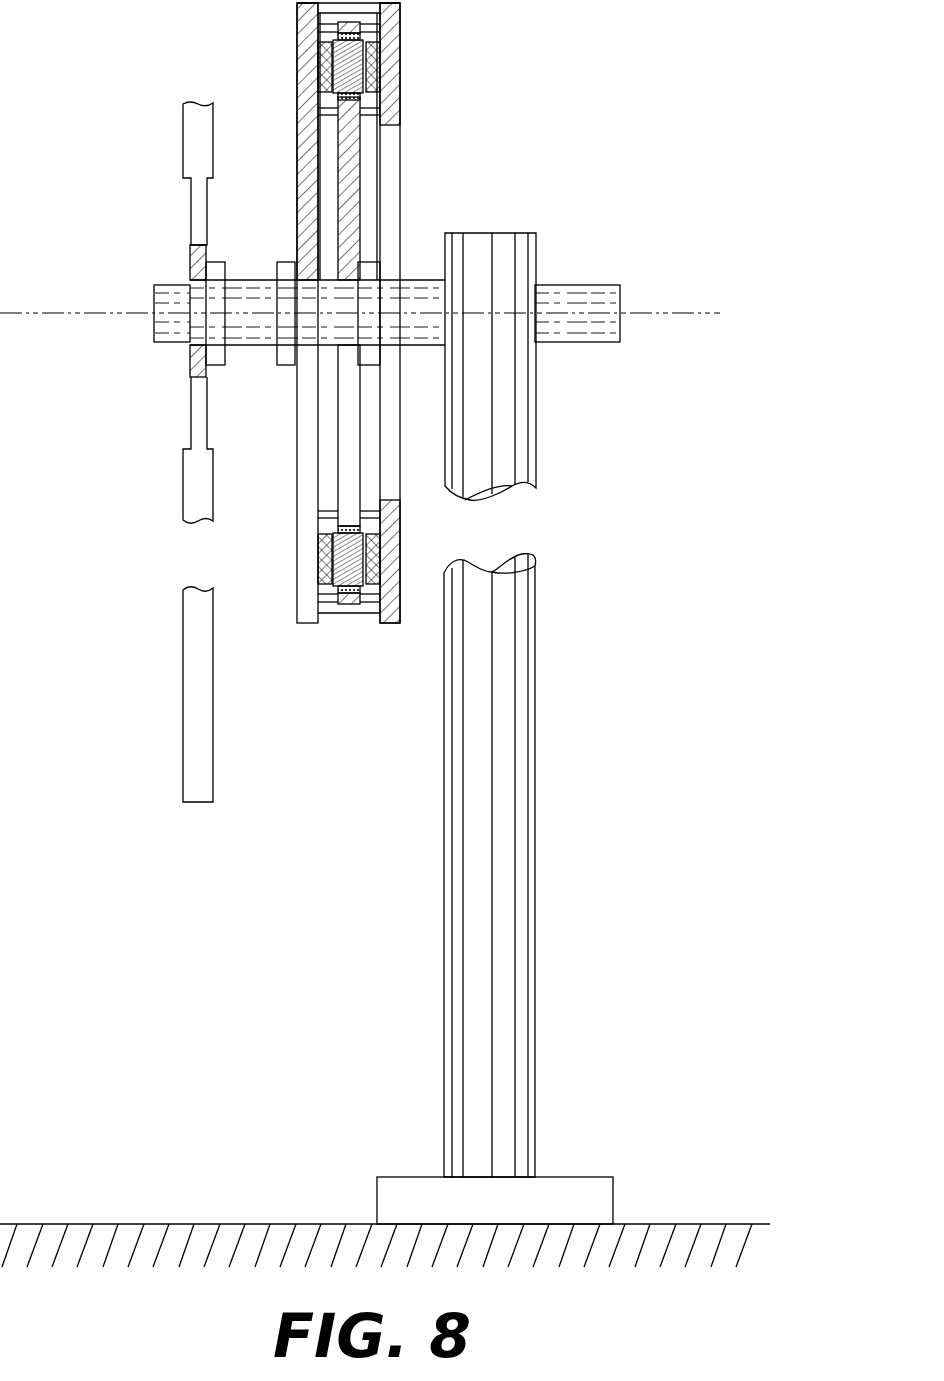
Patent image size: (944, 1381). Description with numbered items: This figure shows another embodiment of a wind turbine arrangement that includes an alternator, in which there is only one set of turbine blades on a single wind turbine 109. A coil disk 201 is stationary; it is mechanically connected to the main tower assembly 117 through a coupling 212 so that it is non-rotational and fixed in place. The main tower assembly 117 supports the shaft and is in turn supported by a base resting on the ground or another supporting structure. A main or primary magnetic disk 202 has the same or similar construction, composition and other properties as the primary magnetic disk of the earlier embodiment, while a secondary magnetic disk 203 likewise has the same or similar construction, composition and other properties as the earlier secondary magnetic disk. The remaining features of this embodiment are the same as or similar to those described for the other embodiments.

The primary magnetic disk 202 is at (297, 49).
The secondary magnetic disk 203 is at (400, 25).
The coil disk 201 is at (360, 200).
The coupling 212 is at (412, 278).
The main tower assembly 117 is at (535, 662).
The wind turbine 109 is at (213, 787).